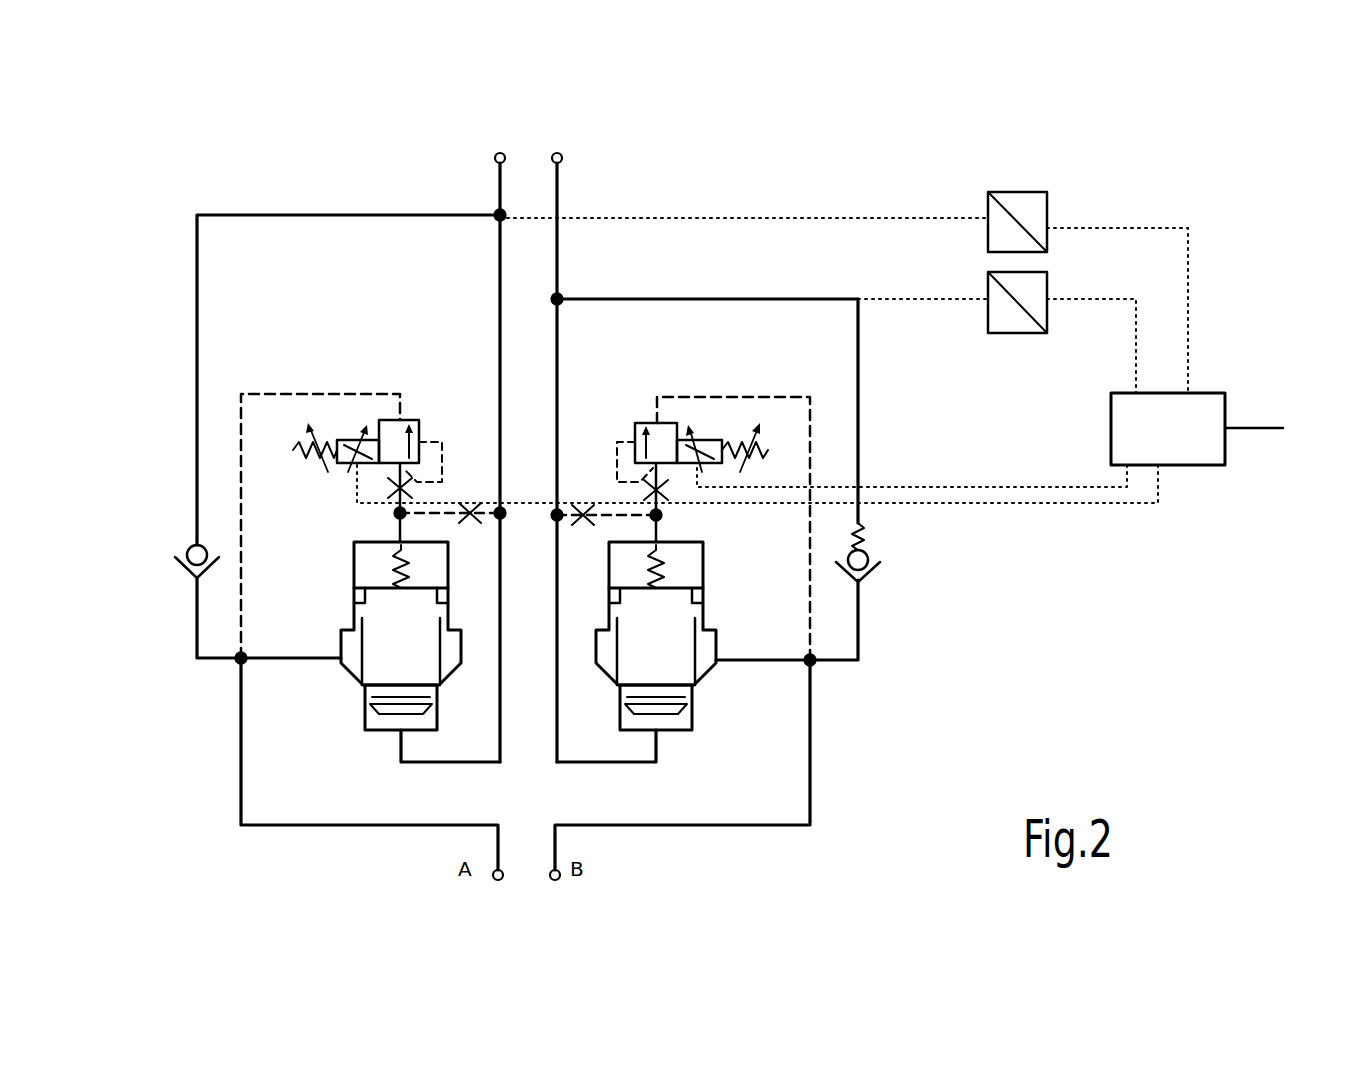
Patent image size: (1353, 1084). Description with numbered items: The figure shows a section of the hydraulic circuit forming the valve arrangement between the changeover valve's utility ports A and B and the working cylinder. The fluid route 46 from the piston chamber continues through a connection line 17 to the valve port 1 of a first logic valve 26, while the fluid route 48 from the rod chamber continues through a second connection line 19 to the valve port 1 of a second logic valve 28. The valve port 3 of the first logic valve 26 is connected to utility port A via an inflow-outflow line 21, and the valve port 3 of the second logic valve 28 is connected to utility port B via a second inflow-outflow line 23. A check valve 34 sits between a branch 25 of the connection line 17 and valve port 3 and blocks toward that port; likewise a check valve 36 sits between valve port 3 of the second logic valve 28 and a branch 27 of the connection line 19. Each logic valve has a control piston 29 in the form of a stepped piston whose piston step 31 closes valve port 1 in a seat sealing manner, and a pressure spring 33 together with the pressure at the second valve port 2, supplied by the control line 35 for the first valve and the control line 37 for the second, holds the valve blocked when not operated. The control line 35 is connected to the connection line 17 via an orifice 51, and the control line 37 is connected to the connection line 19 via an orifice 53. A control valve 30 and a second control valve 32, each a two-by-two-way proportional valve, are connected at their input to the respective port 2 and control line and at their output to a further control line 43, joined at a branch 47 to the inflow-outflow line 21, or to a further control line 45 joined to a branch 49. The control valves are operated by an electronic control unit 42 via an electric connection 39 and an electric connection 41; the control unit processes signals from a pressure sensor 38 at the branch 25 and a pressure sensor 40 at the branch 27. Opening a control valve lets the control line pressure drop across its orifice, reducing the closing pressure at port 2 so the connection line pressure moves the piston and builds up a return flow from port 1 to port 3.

The valve port 1 is at (526, 745).
The valve port 2 is at (527, 525).
The valve port 3 is at (530, 645).
The connection line 17 is at (495, 388).
The second connection line 19 is at (562, 390).
The inflow-outflow line 21 is at (298, 826).
The second inflow-outflow line 23 is at (690, 826).
The branch 25 is at (496, 218).
The first logic valve 26 is at (355, 545).
The branch 27 is at (560, 296).
The second logic valve 28 is at (610, 565).
The control piston 29 is at (372, 622).
The control valve 30 is at (385, 420).
The piston step 31 is at (396, 708).
The second control valve 32 is at (652, 420).
The pressure spring 33 is at (410, 558).
The check valve 34 is at (185, 570).
The control line 35 is at (442, 512).
The check valve 36 is at (875, 578).
The control line 37 is at (625, 512).
The pressure sensor 38 is at (1030, 192).
The electric connection 39 is at (975, 506).
The pressure sensor 40 is at (1015, 333).
The electric connection 41 is at (970, 487).
The electronic control unit 42 is at (1213, 398).
The further control line 43 is at (262, 394).
The further control line 45 is at (768, 397).
The fluid route 46 is at (496, 153).
The branch 47 is at (238, 662).
The fluid route 48 is at (560, 153).
The branch 49 is at (813, 664).
The orifice 51 is at (472, 518).
The orifice 53 is at (576, 508).